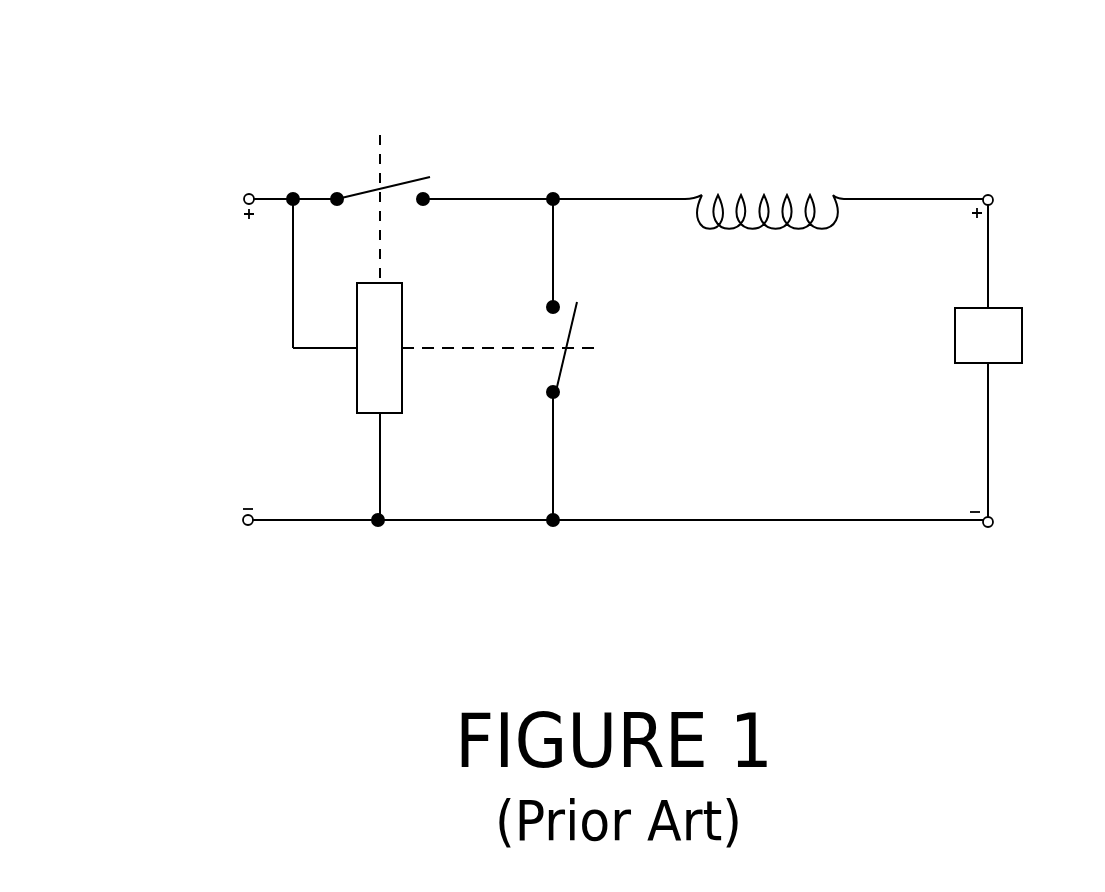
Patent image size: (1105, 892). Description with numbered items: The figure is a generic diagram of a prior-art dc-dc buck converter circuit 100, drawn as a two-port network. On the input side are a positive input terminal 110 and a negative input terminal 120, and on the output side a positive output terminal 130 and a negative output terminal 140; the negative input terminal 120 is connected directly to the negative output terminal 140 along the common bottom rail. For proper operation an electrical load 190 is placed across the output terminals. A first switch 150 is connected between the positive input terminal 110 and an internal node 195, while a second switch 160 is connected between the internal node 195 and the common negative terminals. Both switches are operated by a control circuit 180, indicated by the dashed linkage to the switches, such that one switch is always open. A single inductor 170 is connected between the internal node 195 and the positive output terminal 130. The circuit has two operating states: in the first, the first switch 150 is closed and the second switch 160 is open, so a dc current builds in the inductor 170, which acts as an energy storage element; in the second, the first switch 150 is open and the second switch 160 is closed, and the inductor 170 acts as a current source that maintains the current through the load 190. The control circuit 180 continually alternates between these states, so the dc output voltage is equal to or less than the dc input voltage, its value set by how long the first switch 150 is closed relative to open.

The dc-dc buck converter circuit 100 is at (97, 73).
The positive input terminal 110 is at (247, 194).
The negative input terminal 120 is at (247, 527).
The positive output terminal 130 is at (991, 196).
The negative output terminal 140 is at (990, 529).
The first switch 150 is at (402, 175).
The second switch 160 is at (560, 375).
The inductor 170 is at (755, 185).
The control circuit 180 is at (357, 388).
The electrical load 190 is at (1022, 336).
The internal node 195 is at (553, 193).